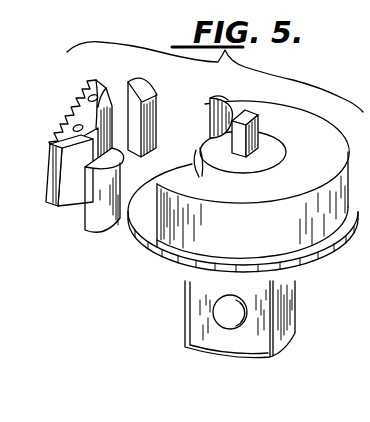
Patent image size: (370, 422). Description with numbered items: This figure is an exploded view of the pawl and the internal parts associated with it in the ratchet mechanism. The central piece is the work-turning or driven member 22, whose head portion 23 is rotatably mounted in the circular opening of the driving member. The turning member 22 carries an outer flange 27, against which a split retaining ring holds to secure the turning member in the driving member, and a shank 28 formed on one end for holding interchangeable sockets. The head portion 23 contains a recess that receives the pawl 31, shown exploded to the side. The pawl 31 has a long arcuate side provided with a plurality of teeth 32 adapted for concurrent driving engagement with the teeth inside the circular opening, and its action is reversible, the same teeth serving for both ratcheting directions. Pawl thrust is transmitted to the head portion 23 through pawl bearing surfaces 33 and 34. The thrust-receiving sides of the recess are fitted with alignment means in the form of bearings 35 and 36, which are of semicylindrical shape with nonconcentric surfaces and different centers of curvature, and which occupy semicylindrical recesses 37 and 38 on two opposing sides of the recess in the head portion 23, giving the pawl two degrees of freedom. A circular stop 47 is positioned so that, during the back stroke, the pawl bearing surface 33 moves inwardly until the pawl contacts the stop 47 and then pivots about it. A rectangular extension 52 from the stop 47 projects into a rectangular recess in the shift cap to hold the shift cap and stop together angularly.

The turning member 22 is at (184, 243).
The head portion 23 is at (270, 247).
The outer flange 27 is at (300, 270).
The shank 28 is at (200, 325).
The pawl 31 is at (55, 116).
The teeth 32 is at (74, 89).
The pawl bearing surface 33 is at (102, 83).
The pawl bearing surface 34 is at (70, 172).
The bearing 35 is at (147, 84).
The bearing 36 is at (90, 217).
The semicylindrical recess 37 is at (210, 108).
The semicylindrical recess 38 is at (194, 153).
The circular stop 47 is at (275, 150).
The rectangular extension 52 is at (252, 150).